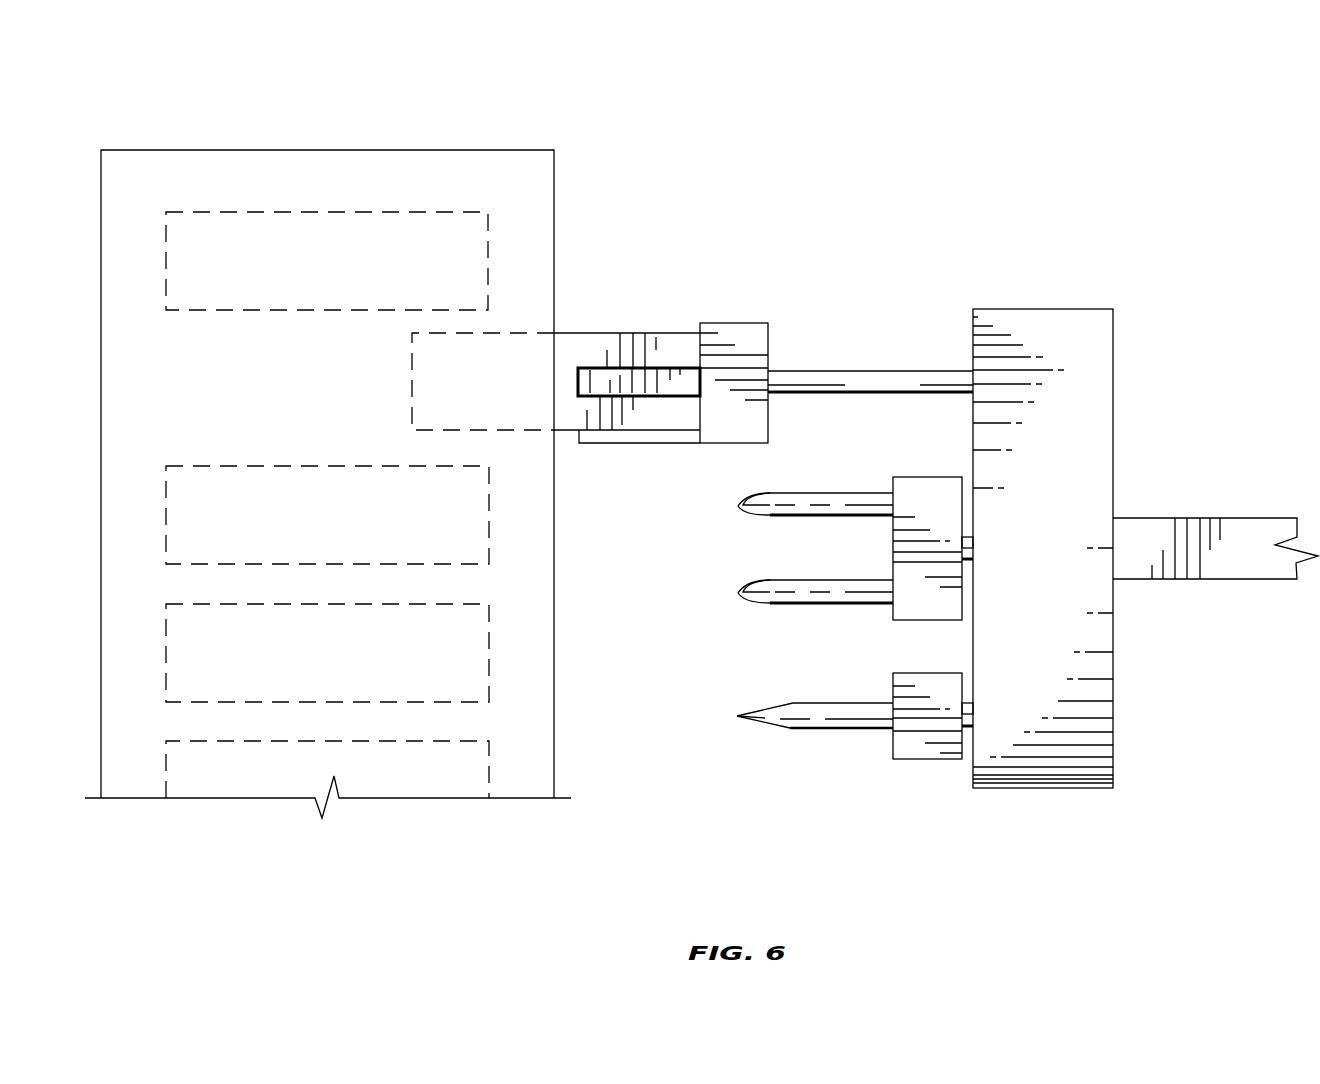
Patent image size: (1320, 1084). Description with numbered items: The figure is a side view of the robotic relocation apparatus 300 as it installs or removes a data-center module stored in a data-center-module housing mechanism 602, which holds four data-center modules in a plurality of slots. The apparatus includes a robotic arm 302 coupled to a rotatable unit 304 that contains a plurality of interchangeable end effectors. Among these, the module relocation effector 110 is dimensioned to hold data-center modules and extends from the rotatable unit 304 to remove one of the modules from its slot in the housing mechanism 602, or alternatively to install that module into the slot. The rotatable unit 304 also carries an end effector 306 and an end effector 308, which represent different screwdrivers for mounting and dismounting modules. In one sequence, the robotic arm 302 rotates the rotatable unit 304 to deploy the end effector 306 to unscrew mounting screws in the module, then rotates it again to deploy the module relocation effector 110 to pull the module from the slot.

The data-center-module housing mechanism 602 is at (285, 150).
The module relocation effector 110 is at (733, 323).
The robotic relocation apparatus 300 is at (1069, 309).
The robotic arm 302 is at (1200, 518).
The rotatable unit 304 is at (1113, 762).
The end effector 306 is at (740, 603).
The end effector 308 is at (893, 756).